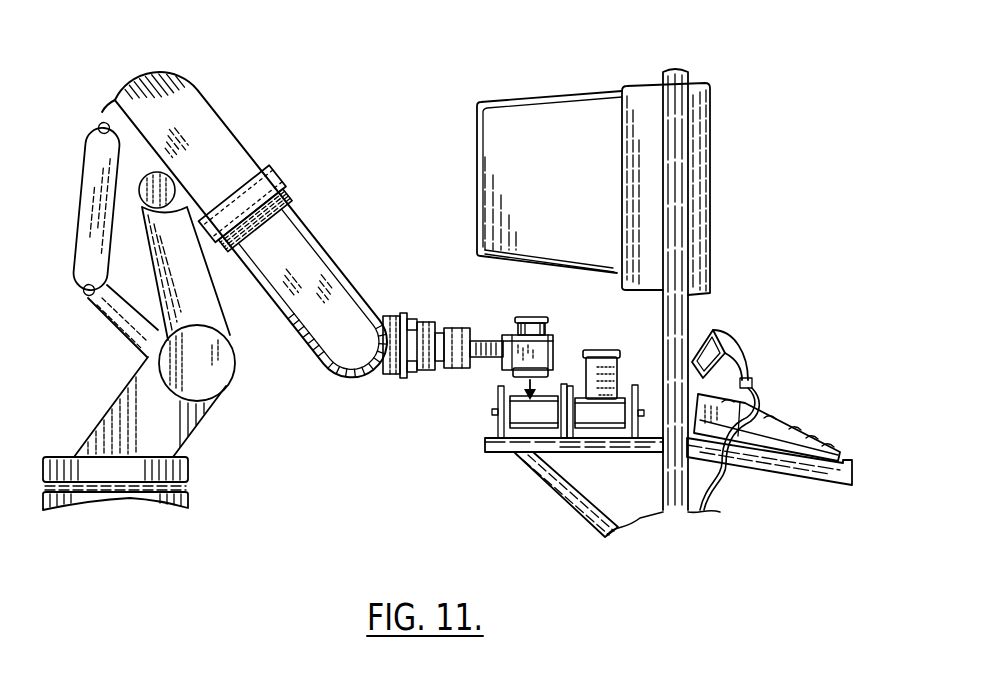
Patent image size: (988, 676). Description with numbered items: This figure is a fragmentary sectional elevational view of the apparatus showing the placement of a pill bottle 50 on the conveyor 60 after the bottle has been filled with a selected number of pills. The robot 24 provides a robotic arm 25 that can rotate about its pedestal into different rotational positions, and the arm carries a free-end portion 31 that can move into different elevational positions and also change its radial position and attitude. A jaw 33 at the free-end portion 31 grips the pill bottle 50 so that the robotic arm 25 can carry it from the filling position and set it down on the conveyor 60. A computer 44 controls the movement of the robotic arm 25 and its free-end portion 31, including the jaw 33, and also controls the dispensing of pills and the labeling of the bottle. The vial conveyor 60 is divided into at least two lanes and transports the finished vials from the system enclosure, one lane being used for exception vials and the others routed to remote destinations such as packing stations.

The robot 24 is at (120, 365).
The robotic arm 25 is at (183, 75).
The free-end portion 31 is at (488, 343).
The jaw 33 is at (522, 362).
The computer 44 is at (578, 182).
The pill bottle 50 is at (538, 318).
The conveyor 60 is at (537, 412).